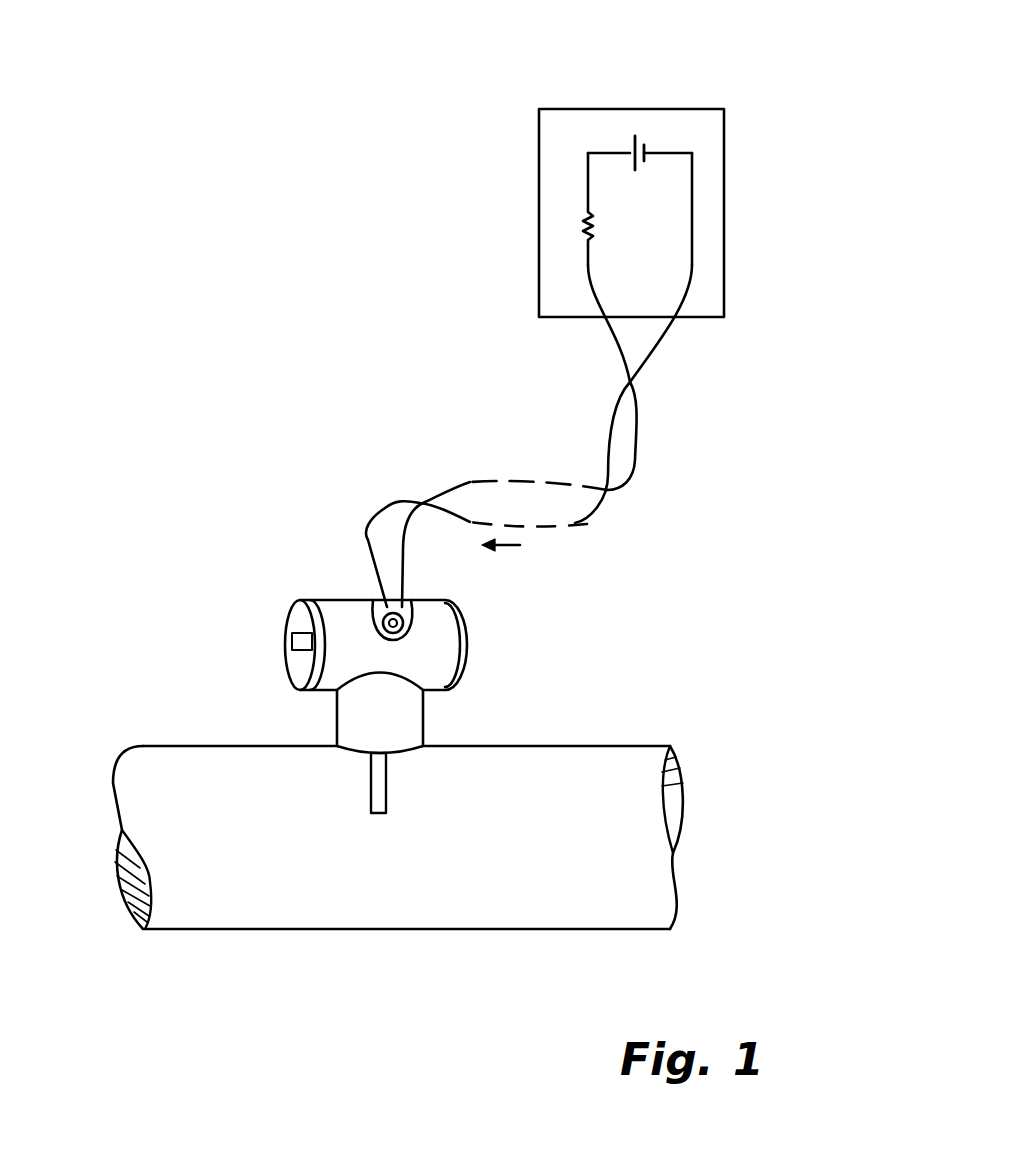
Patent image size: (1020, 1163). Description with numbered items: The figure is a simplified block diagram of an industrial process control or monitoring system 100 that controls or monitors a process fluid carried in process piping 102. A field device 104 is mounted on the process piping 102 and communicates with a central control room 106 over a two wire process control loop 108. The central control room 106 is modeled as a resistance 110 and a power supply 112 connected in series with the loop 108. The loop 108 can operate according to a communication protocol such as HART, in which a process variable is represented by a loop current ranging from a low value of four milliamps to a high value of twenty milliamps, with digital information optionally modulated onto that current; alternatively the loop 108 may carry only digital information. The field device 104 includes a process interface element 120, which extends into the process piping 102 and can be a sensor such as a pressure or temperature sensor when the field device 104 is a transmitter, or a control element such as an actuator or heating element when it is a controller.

The industrial process control or monitoring system 100 is at (198, 66).
The process piping 102 is at (563, 773).
The field device 104 is at (343, 615).
The central control room 106 is at (560, 133).
The two wire process control loop 108 is at (383, 505).
The resistance 110 is at (583, 220).
The power supply 112 is at (648, 150).
The process interface element 120 is at (387, 795).